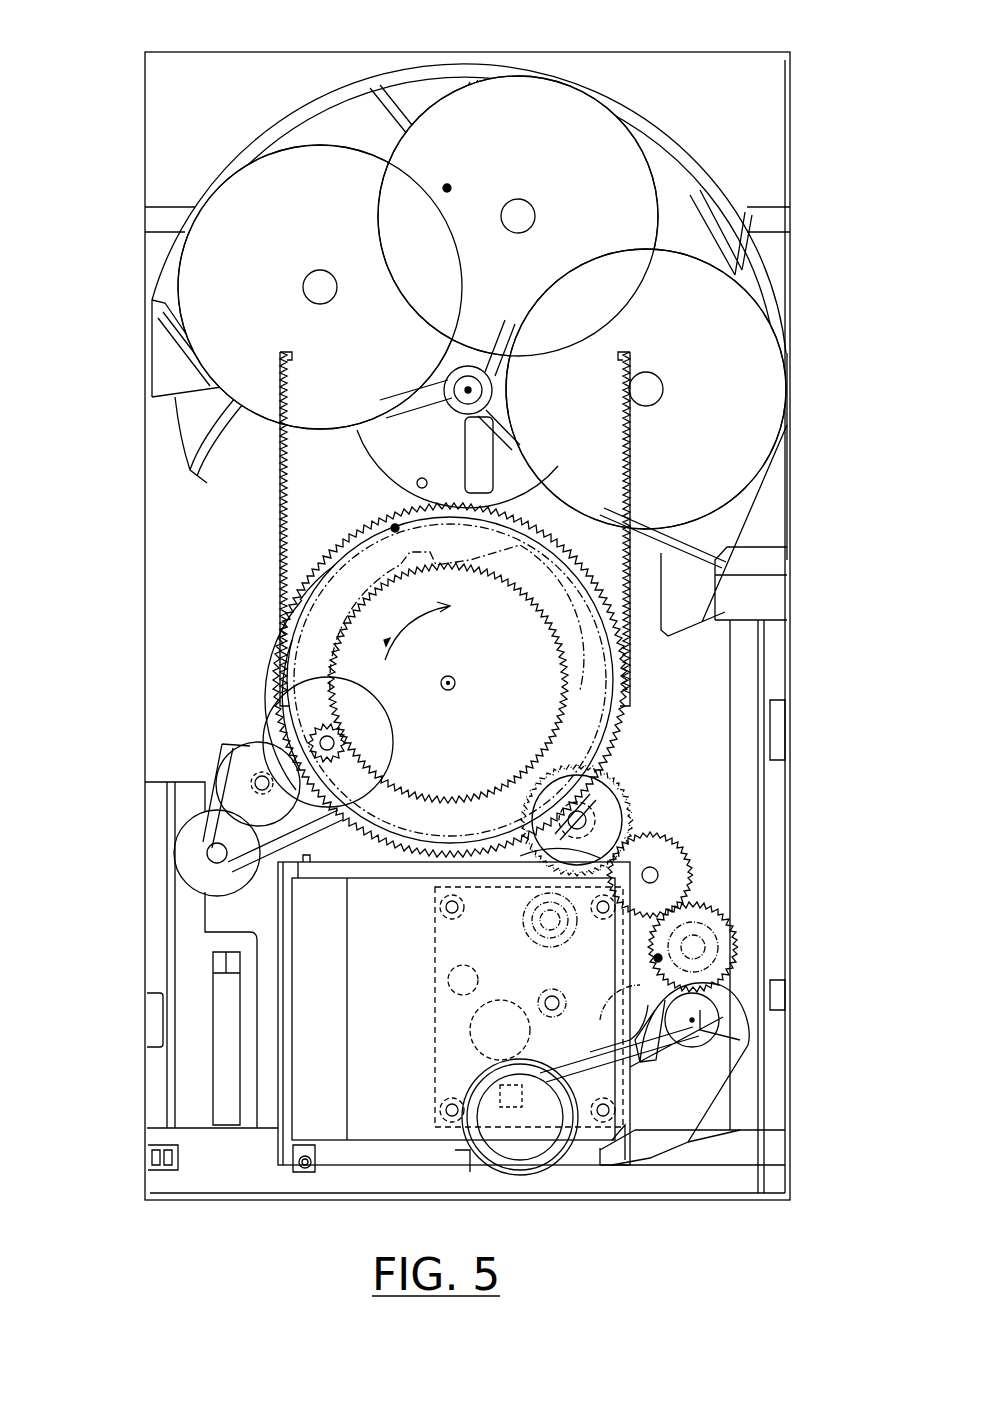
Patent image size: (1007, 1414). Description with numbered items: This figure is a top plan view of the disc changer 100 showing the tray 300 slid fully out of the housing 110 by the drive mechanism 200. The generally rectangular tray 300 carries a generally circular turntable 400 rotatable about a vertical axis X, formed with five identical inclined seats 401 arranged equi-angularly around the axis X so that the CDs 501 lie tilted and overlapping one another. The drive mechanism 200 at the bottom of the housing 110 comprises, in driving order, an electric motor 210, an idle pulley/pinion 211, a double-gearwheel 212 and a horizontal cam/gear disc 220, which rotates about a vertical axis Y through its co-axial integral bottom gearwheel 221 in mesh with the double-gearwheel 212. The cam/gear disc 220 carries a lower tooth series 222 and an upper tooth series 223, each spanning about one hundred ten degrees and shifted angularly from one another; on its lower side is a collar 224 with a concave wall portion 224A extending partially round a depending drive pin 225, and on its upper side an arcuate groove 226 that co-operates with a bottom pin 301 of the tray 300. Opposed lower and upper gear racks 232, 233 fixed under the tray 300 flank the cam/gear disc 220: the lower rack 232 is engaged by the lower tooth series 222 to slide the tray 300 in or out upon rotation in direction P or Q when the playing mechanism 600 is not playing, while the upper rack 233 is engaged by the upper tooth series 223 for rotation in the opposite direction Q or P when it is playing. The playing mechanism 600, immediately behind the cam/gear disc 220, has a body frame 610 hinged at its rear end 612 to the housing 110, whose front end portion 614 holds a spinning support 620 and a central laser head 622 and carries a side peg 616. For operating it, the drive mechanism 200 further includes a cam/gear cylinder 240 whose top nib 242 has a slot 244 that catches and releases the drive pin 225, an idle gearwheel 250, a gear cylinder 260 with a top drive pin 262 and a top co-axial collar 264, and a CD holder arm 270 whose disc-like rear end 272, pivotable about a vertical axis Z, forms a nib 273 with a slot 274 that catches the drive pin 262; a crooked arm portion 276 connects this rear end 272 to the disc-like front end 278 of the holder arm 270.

The disc changer 100 is at (112, 45).
The housing 110 is at (809, 466).
The drive mechanism 200 is at (236, 662).
The electric motor 210 is at (195, 836).
The idle pulley/pinion 211 is at (242, 768).
The double-gearwheel 212 is at (282, 722).
The cam/gear disc 220 is at (338, 668).
The bottom gearwheel 221 is at (300, 728).
The lower tooth series 222 is at (556, 522).
The upper tooth series 223 is at (338, 560).
The collar 224 is at (560, 572).
The concave wall portion 224A is at (374, 560).
The drive pin 225 is at (395, 528).
The arcuate groove 226 is at (412, 802).
The lower gear rack 232 is at (630, 436).
The upper gear rack 233 is at (292, 392).
The cam/gear cylinder 240 is at (658, 798).
The nib 242 is at (598, 800).
The slot 244 is at (598, 778).
The idle gearwheel 250 is at (676, 858).
The gear cylinder 260 is at (756, 920).
The top drive pin 262 is at (658, 958).
The collar 264 is at (716, 952).
The CD holder arm 270 is at (712, 1142).
The rear end 272 is at (752, 1026).
The nib 273 is at (598, 1034).
The slot 274 is at (655, 958).
The crooked arm portion 276 is at (670, 1142).
The front end 278 is at (522, 1178).
The tray 300 is at (810, 147).
The bottom pin 301 is at (447, 188).
The turntable 400 is at (810, 284).
The seats 401 is at (648, 160).
The CDs 501 is at (595, 105).
The playing mechanism 600 is at (352, 1162).
The body frame 610 is at (368, 1140).
The rear end 612 is at (296, 1012).
The front end portion 614 is at (632, 1088).
The side peg 616 is at (556, 858).
The spinning support 620 is at (536, 908).
The laser head 622 is at (546, 1000).
The vertical axis X is at (490, 388).
The vertical axis Y is at (455, 680).
The vertical axis Z is at (698, 1030).
The direction P is at (432, 626).
The direction Q is at (381, 666).